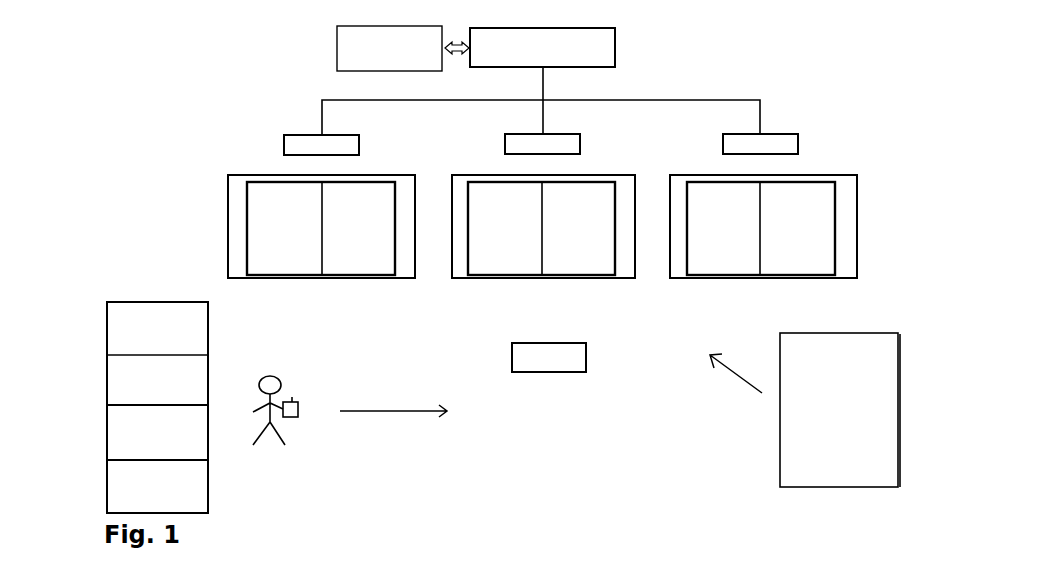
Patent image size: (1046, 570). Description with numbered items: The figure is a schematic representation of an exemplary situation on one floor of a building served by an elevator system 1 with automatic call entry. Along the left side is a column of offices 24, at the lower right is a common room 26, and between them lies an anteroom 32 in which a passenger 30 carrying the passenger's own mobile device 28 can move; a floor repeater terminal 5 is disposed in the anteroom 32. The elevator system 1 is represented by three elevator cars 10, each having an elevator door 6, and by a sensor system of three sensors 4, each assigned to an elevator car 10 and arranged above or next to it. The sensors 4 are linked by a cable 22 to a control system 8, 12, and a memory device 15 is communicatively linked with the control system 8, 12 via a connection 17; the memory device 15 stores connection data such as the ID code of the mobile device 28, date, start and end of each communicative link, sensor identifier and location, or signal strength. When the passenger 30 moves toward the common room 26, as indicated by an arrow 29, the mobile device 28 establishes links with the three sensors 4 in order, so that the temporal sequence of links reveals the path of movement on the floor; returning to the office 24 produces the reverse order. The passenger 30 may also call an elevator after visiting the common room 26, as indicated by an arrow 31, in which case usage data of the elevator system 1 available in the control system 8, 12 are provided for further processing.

The elevator system 1 is at (240, 97).
The sensor 4 is at (300, 135).
The floor repeater terminal 5 is at (588, 355).
The elevator door 6 is at (260, 222).
The control system 8 is at (583, 43).
The control system 12 is at (618, 48).
The elevator car 10 is at (305, 278).
The memory device 15 is at (337, 43).
The connection 17 is at (457, 57).
The cable 22 is at (672, 97).
The offices 24 is at (157, 302).
The common room 26 is at (780, 470).
The mobile device 28 is at (298, 410).
The arrow 29 is at (395, 411).
The passenger 30 is at (280, 376).
The arrow 31 is at (737, 378).
The anteroom 32 is at (512, 467).